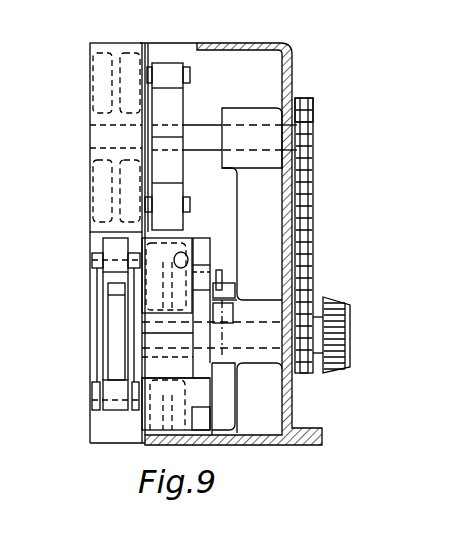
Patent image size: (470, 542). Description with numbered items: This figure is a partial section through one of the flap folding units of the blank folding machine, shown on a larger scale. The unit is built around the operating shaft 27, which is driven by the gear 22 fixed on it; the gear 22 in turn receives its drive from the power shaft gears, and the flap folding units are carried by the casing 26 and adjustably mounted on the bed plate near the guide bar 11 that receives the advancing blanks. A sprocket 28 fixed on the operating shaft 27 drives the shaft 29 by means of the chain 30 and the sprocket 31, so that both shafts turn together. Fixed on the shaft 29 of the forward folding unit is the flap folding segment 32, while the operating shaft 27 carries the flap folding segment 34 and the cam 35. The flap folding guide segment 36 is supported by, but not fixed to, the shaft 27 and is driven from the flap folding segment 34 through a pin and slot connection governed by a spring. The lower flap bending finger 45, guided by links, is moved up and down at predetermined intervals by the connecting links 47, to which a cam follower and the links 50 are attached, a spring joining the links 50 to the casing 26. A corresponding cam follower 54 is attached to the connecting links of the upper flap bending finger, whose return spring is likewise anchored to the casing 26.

The guide bar 11 is at (222, 66).
The gear 22 is at (343, 298).
The casing 26 is at (293, 66).
The operating shaft 27 is at (253, 350).
The sprocket 28 is at (308, 375).
The shaft 29 is at (207, 126).
The chain 30 is at (313, 245).
The sprocket 31 is at (313, 104).
The flap folding segment 32 is at (90, 78).
The flap folding segment 34 is at (143, 420).
The cam 35 is at (113, 293).
The flap folding guide segment 36 is at (208, 238).
The lower flap bending finger 45 is at (103, 247).
The connecting links 47 is at (97, 358).
The links 50 is at (92, 408).
The cam follower 54 is at (160, 63).